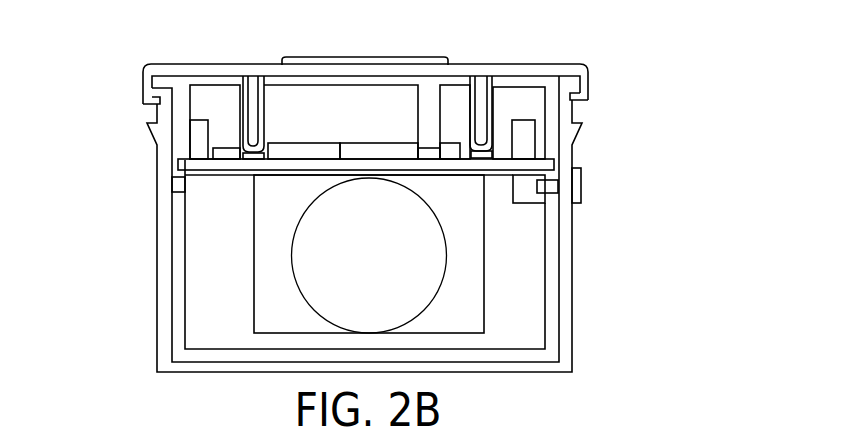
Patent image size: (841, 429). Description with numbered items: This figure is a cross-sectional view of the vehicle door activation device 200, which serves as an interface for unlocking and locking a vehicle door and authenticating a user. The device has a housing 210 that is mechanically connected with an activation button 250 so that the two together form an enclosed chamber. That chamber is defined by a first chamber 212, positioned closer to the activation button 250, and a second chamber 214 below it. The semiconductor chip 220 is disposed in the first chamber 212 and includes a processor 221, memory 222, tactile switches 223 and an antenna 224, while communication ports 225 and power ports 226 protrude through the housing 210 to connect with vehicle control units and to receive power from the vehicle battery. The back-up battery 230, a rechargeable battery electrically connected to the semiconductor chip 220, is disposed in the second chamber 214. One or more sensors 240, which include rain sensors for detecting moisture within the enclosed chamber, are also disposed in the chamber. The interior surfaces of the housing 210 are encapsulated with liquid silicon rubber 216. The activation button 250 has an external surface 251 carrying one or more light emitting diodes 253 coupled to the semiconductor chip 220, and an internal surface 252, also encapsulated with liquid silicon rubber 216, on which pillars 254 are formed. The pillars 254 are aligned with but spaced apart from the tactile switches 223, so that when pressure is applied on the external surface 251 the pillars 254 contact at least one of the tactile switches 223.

The vehicle door activation device 200 is at (629, 87).
The housing 210 is at (155, 255).
The first chamber 212 is at (367, 122).
The second chamber 214 is at (365, 254).
The liquid silicon rubber 216 is at (157, 305).
The semiconductor chip 220 is at (210, 178).
The processor 221 is at (384, 152).
The memory 222 is at (302, 152).
The tactile switches 223 is at (250, 160).
The antenna 224 is at (523, 145).
The communication ports 225 is at (581, 192).
The power ports 226 is at (576, 185).
The back-up battery 230 is at (384, 264).
The sensors 240 is at (228, 148).
The activation button 250 is at (150, 66).
The external surface 251 is at (192, 103).
The internal surface 252 is at (158, 102).
The light emitting diodes 253 is at (437, 57).
The pillars 254 is at (267, 113).